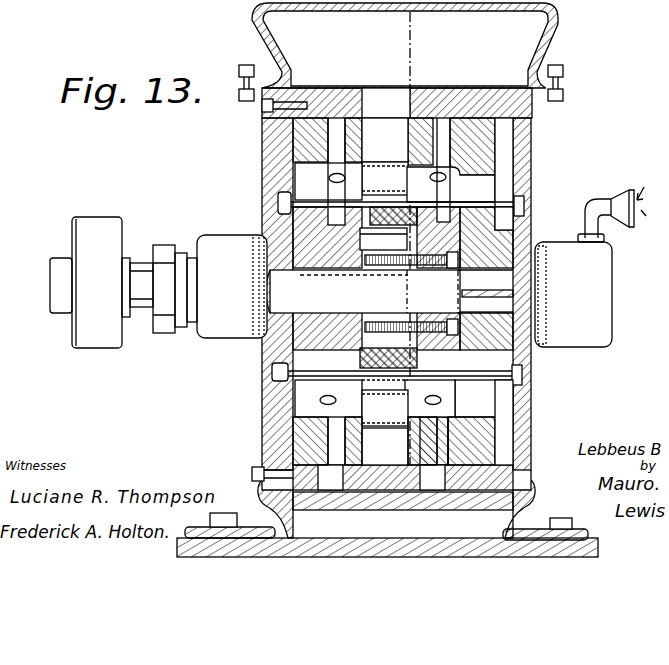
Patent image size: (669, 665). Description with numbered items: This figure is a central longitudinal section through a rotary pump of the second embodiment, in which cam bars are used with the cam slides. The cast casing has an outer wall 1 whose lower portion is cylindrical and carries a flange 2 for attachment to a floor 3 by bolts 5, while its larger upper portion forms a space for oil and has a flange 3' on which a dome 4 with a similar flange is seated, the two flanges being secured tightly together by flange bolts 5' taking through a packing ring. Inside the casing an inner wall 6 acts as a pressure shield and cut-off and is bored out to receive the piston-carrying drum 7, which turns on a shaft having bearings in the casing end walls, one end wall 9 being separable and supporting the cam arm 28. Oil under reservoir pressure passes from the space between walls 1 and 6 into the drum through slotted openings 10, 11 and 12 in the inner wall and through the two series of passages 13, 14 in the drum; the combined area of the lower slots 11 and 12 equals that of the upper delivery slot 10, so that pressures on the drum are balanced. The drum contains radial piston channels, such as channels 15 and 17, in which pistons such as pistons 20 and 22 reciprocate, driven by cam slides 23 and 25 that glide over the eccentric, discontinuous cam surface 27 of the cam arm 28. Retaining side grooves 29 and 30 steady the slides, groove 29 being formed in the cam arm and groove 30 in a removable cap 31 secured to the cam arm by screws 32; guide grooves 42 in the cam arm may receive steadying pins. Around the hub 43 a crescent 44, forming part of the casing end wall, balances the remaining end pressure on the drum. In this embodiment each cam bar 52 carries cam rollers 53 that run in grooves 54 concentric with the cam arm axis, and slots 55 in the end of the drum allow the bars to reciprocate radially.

The outer wall 1 is at (531, 325).
The flange 2 is at (384, 528).
The floor 3 is at (400, 291).
The flange 3' is at (258, 114).
The dome 4 is at (486, 9).
The bolts 5 is at (568, 514).
The cover bolt 5' is at (228, 77).
The inner wall 6 is at (492, 480).
The piston-carrying drum 7 is at (483, 153).
The end wall 9 is at (267, 170).
The slotted opening 10 is at (374, 99).
The slotted opening 11 is at (330, 486).
The slotted opening 12 is at (437, 489).
The passages 13 is at (333, 139).
The passages 14 is at (440, 117).
The piston channel 15 is at (385, 447).
The piston channel 17 is at (385, 140).
The piston 20 is at (385, 404).
The piston 22 is at (385, 177).
The cam slide 23 is at (430, 398).
The cam slide 25 is at (451, 187).
The cam surface 27 is at (356, 328).
The cam arm 28 is at (409, 237).
The retaining side groove 29 is at (293, 220).
The retaining side groove 30 is at (485, 293).
The removable cap 31 is at (482, 285).
The screws 32 is at (432, 293).
The guide grooves 42 is at (336, 216).
The hub 43 is at (537, 327).
The crescent 44 is at (537, 258).
The cam bar 52 is at (474, 204).
The cam rollers 53 is at (526, 206).
The grooves 54 is at (513, 222).
The slots 55 is at (485, 184).